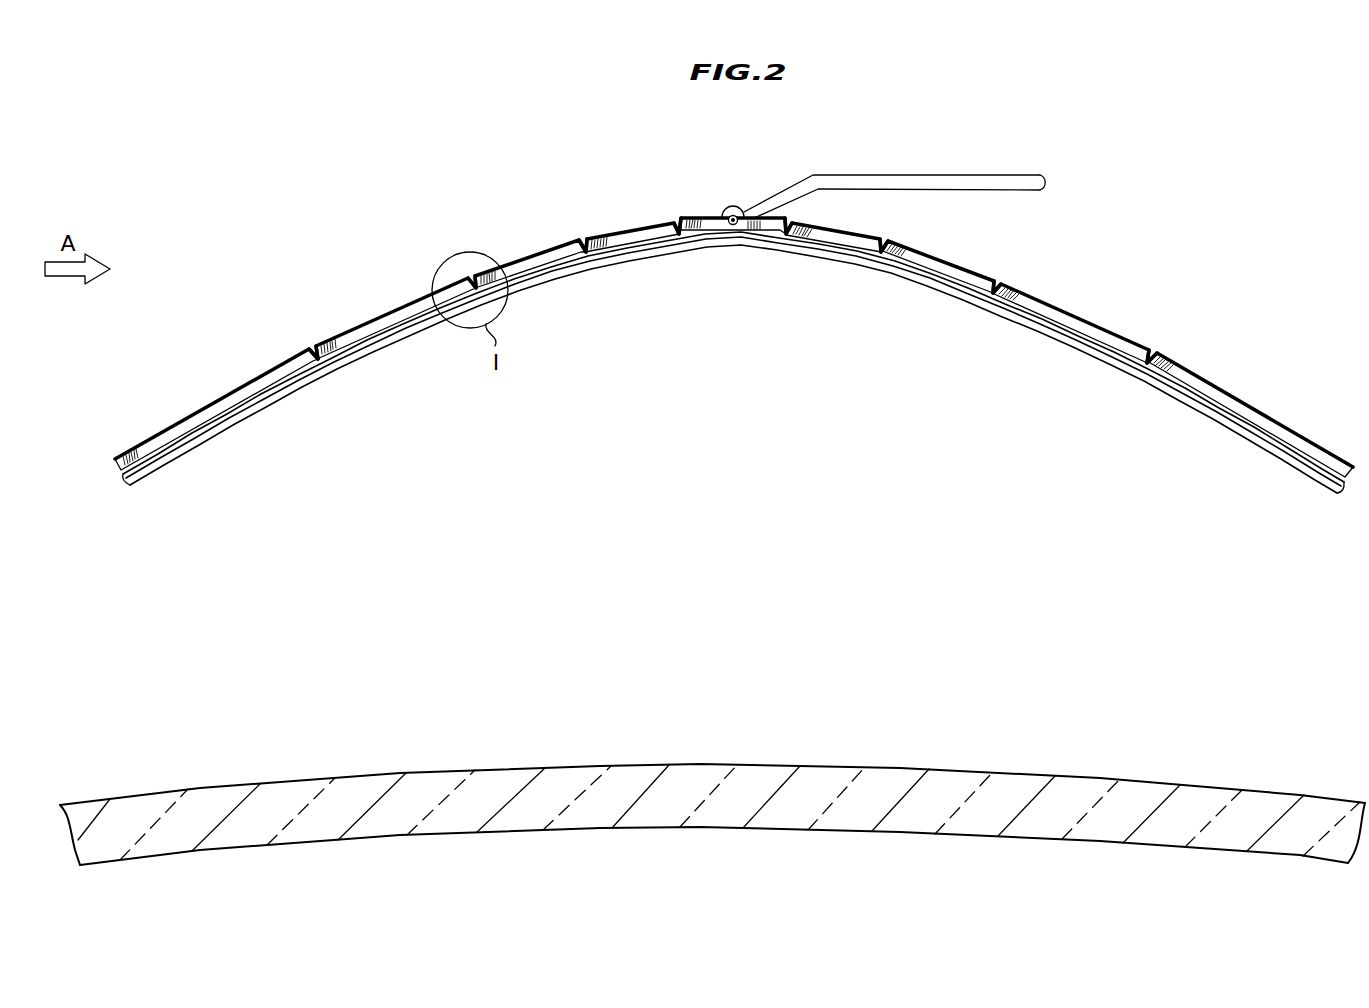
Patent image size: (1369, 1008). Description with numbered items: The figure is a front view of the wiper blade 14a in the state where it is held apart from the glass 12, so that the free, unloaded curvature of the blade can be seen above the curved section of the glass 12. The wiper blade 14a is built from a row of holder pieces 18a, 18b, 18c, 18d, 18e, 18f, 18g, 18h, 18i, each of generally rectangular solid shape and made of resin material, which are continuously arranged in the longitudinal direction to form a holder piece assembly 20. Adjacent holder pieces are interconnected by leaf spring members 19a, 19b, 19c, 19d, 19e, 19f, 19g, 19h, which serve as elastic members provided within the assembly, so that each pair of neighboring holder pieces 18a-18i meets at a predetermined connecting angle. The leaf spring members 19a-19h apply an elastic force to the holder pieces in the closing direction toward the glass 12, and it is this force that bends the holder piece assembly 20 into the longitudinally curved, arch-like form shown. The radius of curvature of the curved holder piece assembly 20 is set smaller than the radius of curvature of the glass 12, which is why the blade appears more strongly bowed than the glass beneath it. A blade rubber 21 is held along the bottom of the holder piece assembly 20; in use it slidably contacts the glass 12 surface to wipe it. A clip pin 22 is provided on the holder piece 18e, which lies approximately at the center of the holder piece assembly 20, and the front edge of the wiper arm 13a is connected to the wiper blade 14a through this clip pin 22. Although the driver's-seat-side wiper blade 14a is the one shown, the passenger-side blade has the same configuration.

The glass 12 is at (1045, 771).
The wiper arm 13a is at (990, 176).
The wiper blade 14a is at (630, 463).
The holder piece 18a is at (148, 438).
The holder piece 18b is at (364, 322).
The holder piece 18c is at (526, 256).
The holder piece 18d is at (622, 233).
The holder piece 18e is at (710, 215).
The holder piece 18f is at (850, 232).
The holder piece 18g is at (957, 266).
The holder piece 18h is at (1105, 328).
The holder piece 18i is at (1270, 416).
The leaf spring member 19a is at (313, 350).
The leaf spring member 19b is at (472, 278).
The leaf spring member 19c is at (583, 241).
The leaf spring member 19d is at (677, 223).
The leaf spring member 19e is at (788, 233).
The leaf spring member 19f is at (883, 252).
The leaf spring member 19g is at (1000, 286).
The leaf spring member 19h is at (1154, 355).
The holder piece assembly 20 is at (233, 391).
The blade rubber 21 is at (687, 250).
The clip pin 22 is at (733, 226).